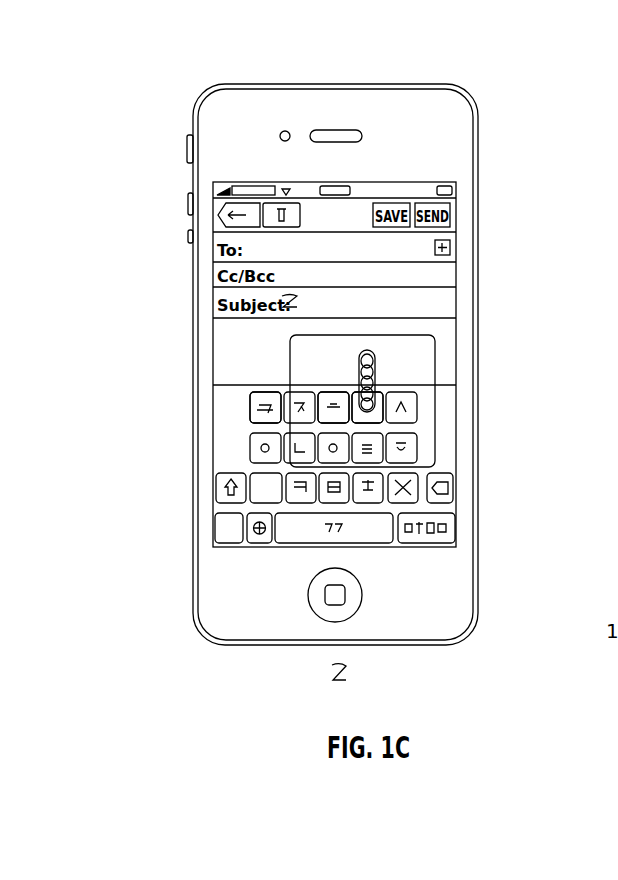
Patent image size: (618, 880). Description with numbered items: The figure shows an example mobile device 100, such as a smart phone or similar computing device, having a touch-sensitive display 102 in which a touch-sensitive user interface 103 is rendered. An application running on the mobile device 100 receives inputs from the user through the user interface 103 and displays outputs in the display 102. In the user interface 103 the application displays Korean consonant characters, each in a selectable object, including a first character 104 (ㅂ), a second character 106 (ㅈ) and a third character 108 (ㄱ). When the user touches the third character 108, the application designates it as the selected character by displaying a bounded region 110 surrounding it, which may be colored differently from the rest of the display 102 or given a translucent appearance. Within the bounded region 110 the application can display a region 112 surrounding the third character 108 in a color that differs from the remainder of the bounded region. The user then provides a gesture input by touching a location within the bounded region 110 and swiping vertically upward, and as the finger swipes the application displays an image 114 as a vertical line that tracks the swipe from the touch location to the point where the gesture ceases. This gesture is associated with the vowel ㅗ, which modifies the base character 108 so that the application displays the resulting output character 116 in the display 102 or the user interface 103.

The mobile device 100 is at (138, 88).
The touch-sensitive display 102 is at (190, 246).
The touch-sensitive user interface 103 is at (270, 485).
The first character 104 is at (253, 395).
The second character 106 is at (258, 407).
The third character 108 is at (335, 403).
The bounded region 110 is at (388, 465).
The region 112 is at (385, 396).
The image 114 is at (374, 357).
The character 116 is at (303, 297).